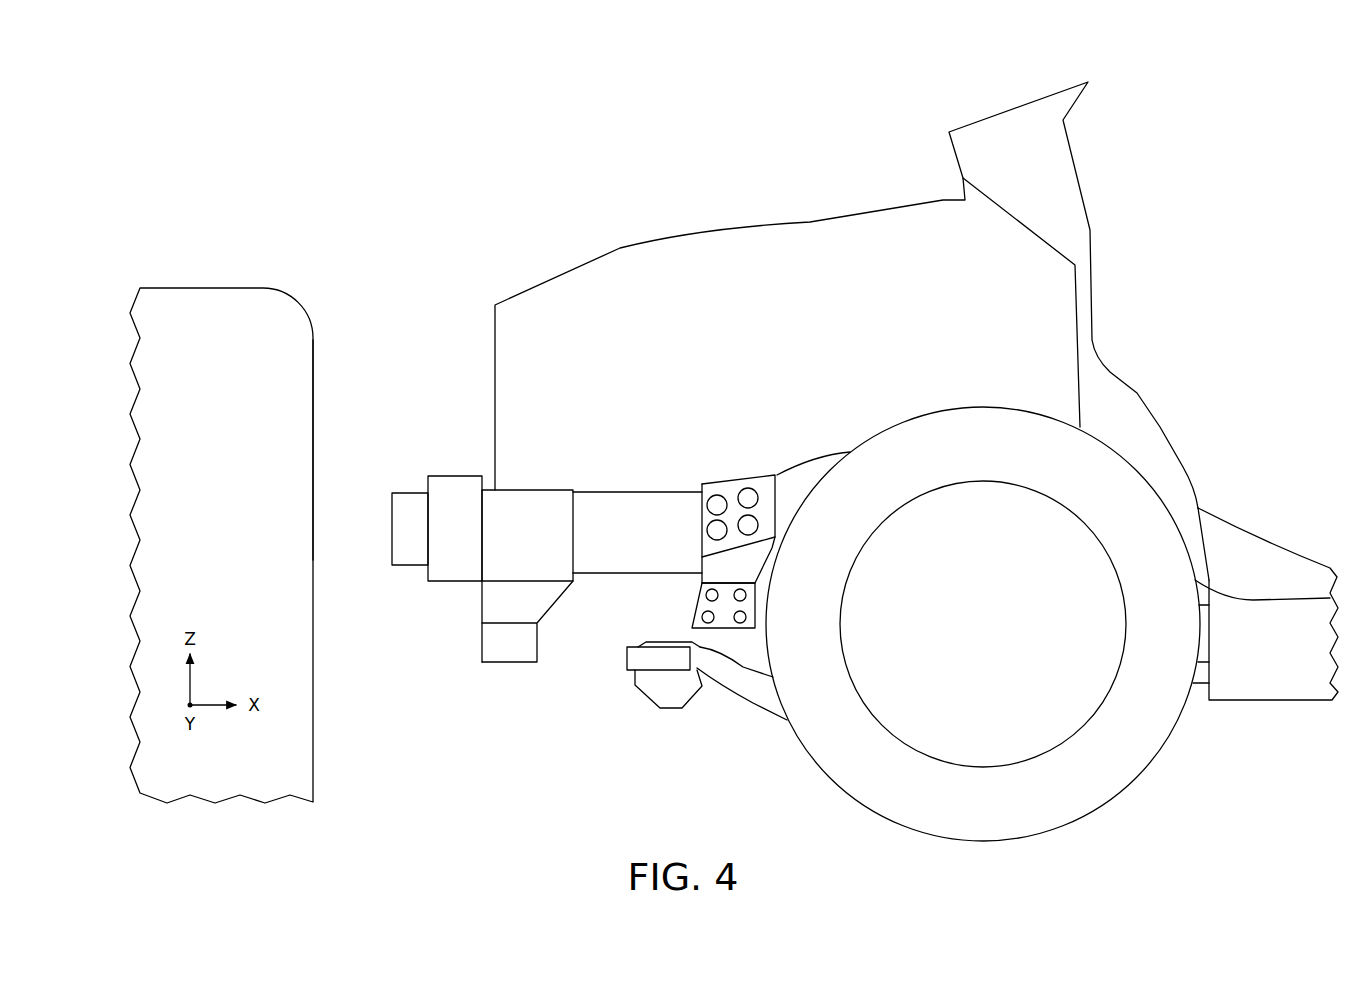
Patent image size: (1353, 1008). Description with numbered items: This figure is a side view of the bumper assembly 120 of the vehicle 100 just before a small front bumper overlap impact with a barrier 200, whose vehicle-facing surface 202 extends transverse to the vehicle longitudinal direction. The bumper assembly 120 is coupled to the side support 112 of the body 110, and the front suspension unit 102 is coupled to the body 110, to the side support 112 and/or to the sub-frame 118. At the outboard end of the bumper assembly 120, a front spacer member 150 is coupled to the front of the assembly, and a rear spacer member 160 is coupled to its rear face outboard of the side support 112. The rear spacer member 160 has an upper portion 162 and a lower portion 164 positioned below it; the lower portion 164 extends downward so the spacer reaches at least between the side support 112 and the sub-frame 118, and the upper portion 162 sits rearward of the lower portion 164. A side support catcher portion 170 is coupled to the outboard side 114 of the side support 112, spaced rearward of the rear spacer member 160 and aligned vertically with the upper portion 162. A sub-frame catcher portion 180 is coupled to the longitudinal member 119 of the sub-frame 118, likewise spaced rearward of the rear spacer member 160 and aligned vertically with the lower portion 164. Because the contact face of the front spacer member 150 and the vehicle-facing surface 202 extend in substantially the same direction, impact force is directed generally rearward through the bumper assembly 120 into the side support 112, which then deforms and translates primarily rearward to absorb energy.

The vehicle 100 is at (798, 140).
The front suspension unit 102 is at (1150, 791).
The body 110 is at (713, 140).
The side support 112 is at (636, 482).
The outboard side 114 is at (683, 498).
The sub-frame 118 is at (757, 723).
The longitudinal member 119 is at (733, 700).
The bumper assembly 120 is at (416, 442).
The front spacer member 150 is at (442, 601).
The rear spacer member 160 is at (537, 478).
The upper portion 162 is at (573, 528).
The lower portion 164 is at (537, 643).
The side support catcher portion 170 is at (722, 472).
The sub-frame catcher portion 180 is at (649, 716).
The barrier 200 is at (278, 260).
The vehicle-facing surface 202 is at (313, 465).